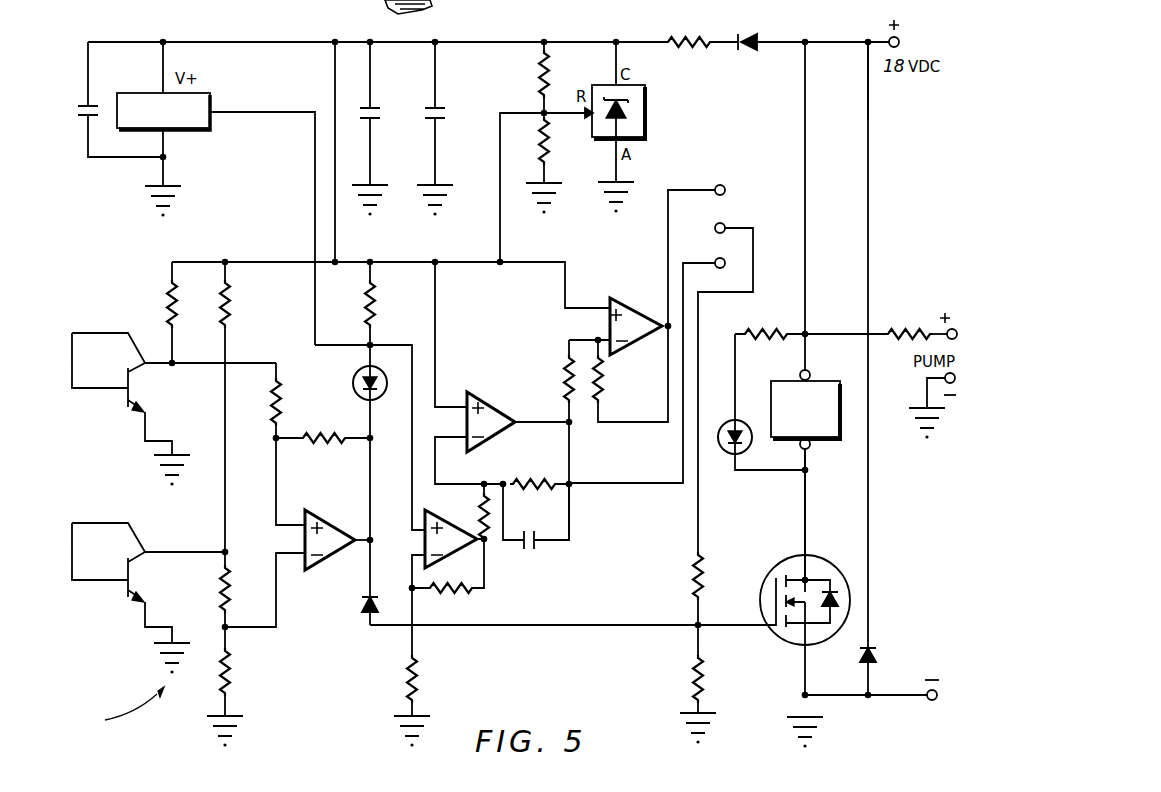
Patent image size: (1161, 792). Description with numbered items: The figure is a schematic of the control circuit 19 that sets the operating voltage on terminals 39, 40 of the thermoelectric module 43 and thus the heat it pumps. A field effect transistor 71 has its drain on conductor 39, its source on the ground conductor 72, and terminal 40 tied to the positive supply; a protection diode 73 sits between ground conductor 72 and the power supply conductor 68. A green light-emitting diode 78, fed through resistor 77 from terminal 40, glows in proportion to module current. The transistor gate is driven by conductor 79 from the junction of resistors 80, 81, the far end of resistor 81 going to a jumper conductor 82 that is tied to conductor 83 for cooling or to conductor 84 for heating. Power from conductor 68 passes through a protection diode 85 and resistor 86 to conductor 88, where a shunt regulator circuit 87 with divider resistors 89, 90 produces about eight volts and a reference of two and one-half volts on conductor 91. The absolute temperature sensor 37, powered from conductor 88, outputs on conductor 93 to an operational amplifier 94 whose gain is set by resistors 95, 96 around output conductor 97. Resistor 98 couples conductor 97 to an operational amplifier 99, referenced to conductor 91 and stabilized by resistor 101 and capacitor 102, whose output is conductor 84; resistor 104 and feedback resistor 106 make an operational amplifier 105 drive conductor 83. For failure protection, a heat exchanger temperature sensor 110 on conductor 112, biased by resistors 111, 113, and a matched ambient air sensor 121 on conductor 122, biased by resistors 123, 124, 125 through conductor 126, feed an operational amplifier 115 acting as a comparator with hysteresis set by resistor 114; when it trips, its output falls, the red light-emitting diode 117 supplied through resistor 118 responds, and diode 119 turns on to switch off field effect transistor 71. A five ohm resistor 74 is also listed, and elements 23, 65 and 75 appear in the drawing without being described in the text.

The control circuit 19 is at (121, 708).
The relay coil lead 23 is at (808, 472).
The absolute temperature sensor 37 is at (132, 90).
The terminal 39 is at (804, 490).
The terminal 40 is at (814, 332).
The thermoelectric module 43 is at (813, 376).
The pump motor 65 is at (412, 10).
The power supply conductor 68 is at (866, 44).
The field effect transistor 71 is at (822, 568).
The ground conductor 72 is at (923, 390).
The protection diode 73 is at (860, 656).
The resistor 74 is at (898, 320).
The pump terminal 75 is at (956, 328).
The resistor 77 is at (748, 330).
The green light-emitting diode 78 is at (748, 450).
The conductor 79 is at (698, 628).
The resistor 80 is at (692, 672).
The resistor 81 is at (694, 582).
The jumper conductor 82 is at (753, 262).
The conductor 83 is at (696, 190).
The conductor 84 is at (600, 484).
The protection diode 85 is at (750, 50).
The resistor 86 is at (680, 50).
The shunt regulator circuit 87 is at (655, 72).
The conductor 88 is at (562, 44).
The resistor 89 is at (540, 84).
The resistor 90 is at (552, 150).
The conductor 91 is at (500, 138).
The conductor 93 is at (315, 218).
The operational amplifier 94 is at (414, 546).
The resistor 95 is at (400, 678).
The resistor 96 is at (452, 592).
The conductor 97 is at (486, 550).
The resistor 98 is at (484, 494).
The operational amplifier 99 is at (520, 390).
The resistor 101 is at (546, 478).
The capacitor 102 is at (514, 530).
The resistor 104 is at (564, 382).
The operational amplifier 105 is at (648, 285).
The resistor 106 is at (603, 422).
The heat exchanger temperature sensor 110 is at (85, 333).
The resistor 111 is at (164, 296).
The conductor 112 is at (239, 363).
The resistor 113 is at (278, 410).
The resistor 114 is at (318, 442).
The operational amplifier 115 is at (350, 498).
The red light-emitting diode 117 is at (352, 382).
The resistor 118 is at (372, 312).
The diode 119 is at (362, 602).
The ambient air sensor 121 is at (84, 523).
The conductor 122 is at (160, 552).
The resistor 123 is at (226, 306).
The resistor 124 is at (228, 590).
The resistor 125 is at (232, 664).
The conductor 126 is at (278, 585).